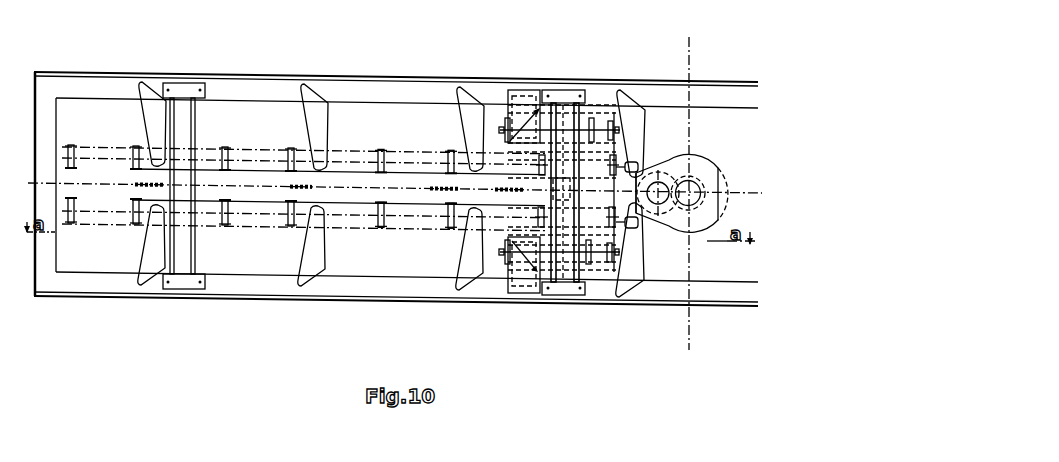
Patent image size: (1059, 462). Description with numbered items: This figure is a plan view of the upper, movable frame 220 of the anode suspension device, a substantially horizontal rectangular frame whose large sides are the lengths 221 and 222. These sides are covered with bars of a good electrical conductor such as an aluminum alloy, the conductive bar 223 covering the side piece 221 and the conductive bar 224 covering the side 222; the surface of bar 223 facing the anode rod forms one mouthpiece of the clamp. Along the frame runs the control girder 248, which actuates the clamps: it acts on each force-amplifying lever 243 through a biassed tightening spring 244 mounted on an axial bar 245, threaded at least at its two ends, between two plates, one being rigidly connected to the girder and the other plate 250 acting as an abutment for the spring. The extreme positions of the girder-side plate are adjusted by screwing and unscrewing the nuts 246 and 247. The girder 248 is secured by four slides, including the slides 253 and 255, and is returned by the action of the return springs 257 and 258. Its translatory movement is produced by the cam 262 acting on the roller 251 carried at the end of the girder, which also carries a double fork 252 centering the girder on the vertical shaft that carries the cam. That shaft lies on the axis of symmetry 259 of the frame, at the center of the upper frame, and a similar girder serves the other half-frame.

The movable frame 220 is at (48, 278).
The side piece of the frame 221 is at (715, 288).
The side length of the frame 222 is at (727, 92).
The conductive bar 223 is at (702, 302).
The conductive bar 224 is at (706, 85).
The force-amplifying lever 243 is at (636, 263).
The biassed tightening spring 244 is at (583, 227).
The axial bar 245 is at (536, 214).
The nut 246 is at (613, 221).
The nut 247 is at (538, 206).
The control girder 248 is at (337, 177).
The plate 250 is at (534, 228).
The roller 251 is at (677, 166).
The double fork 252 is at (717, 195).
The slide 253 is at (195, 122).
The slide 255 is at (540, 146).
The return spring 257 is at (518, 264).
The return spring 258 is at (540, 112).
The axis of symmetry 259 is at (686, 50).
The cam 262 is at (688, 156).